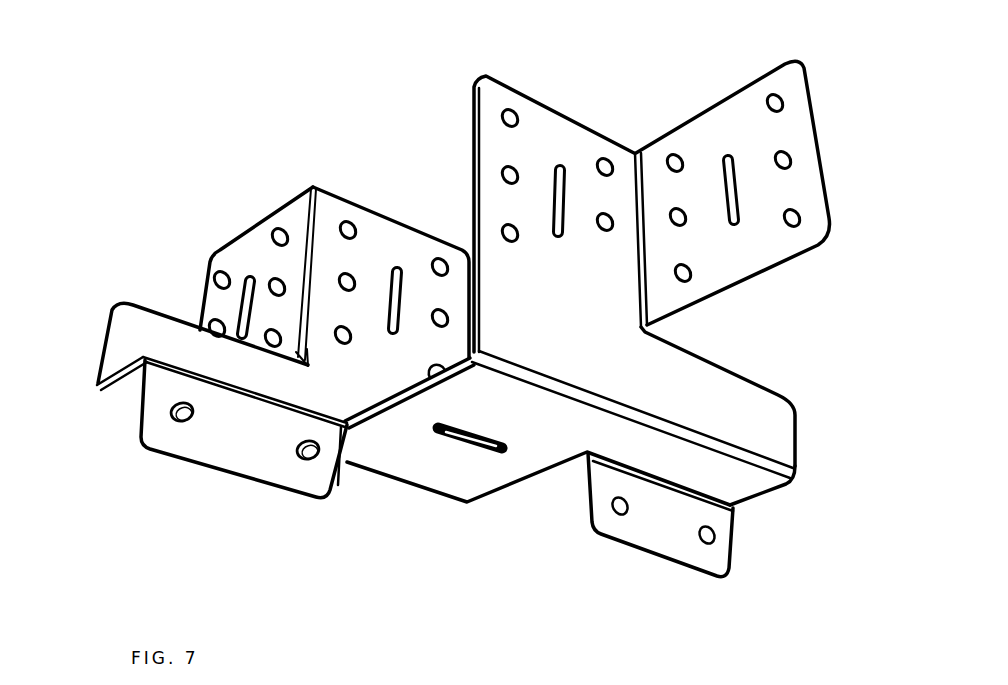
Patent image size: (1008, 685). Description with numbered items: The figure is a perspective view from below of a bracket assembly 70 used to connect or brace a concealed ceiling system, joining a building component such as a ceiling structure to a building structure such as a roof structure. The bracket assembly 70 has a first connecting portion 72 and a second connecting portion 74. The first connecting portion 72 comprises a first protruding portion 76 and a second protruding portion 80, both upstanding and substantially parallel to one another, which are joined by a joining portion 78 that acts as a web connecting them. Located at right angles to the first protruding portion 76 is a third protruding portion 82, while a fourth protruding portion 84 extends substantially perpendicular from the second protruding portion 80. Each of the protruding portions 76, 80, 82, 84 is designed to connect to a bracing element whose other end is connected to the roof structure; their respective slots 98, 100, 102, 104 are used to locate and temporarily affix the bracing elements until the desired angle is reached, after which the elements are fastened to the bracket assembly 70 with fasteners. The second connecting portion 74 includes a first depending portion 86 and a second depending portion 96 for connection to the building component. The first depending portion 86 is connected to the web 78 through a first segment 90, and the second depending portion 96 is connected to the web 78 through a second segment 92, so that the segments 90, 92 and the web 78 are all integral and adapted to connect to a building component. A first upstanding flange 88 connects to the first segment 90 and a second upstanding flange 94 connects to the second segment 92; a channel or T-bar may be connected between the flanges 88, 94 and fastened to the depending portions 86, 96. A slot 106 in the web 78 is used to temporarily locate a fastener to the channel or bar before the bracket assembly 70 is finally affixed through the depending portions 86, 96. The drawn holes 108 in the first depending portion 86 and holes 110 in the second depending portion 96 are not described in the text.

The bracket assembly 70 is at (212, 93).
The first connecting portion 72 is at (410, 129).
The second connecting portion 74 is at (168, 480).
The first protruding portion 76 is at (368, 207).
The joining portion 78 is at (480, 478).
The second protruding portion 80 is at (553, 108).
The third protruding portion 82 is at (212, 262).
The fourth protruding portion 84 is at (818, 125).
The first depending portion 86 is at (148, 443).
The first upstanding flange 88 is at (102, 342).
The first segment 90 is at (105, 400).
The second segment 92 is at (745, 485).
The second upstanding flange 94 is at (763, 430).
The second depending portion 96 is at (733, 548).
The slot 98 is at (246, 272).
The slot 100 is at (398, 268).
The slot 102 is at (559, 240).
The slot 104 is at (733, 226).
The slot 106 is at (492, 438).
The tab holes 108 is at (307, 462).
The tab holes 110 is at (707, 545).